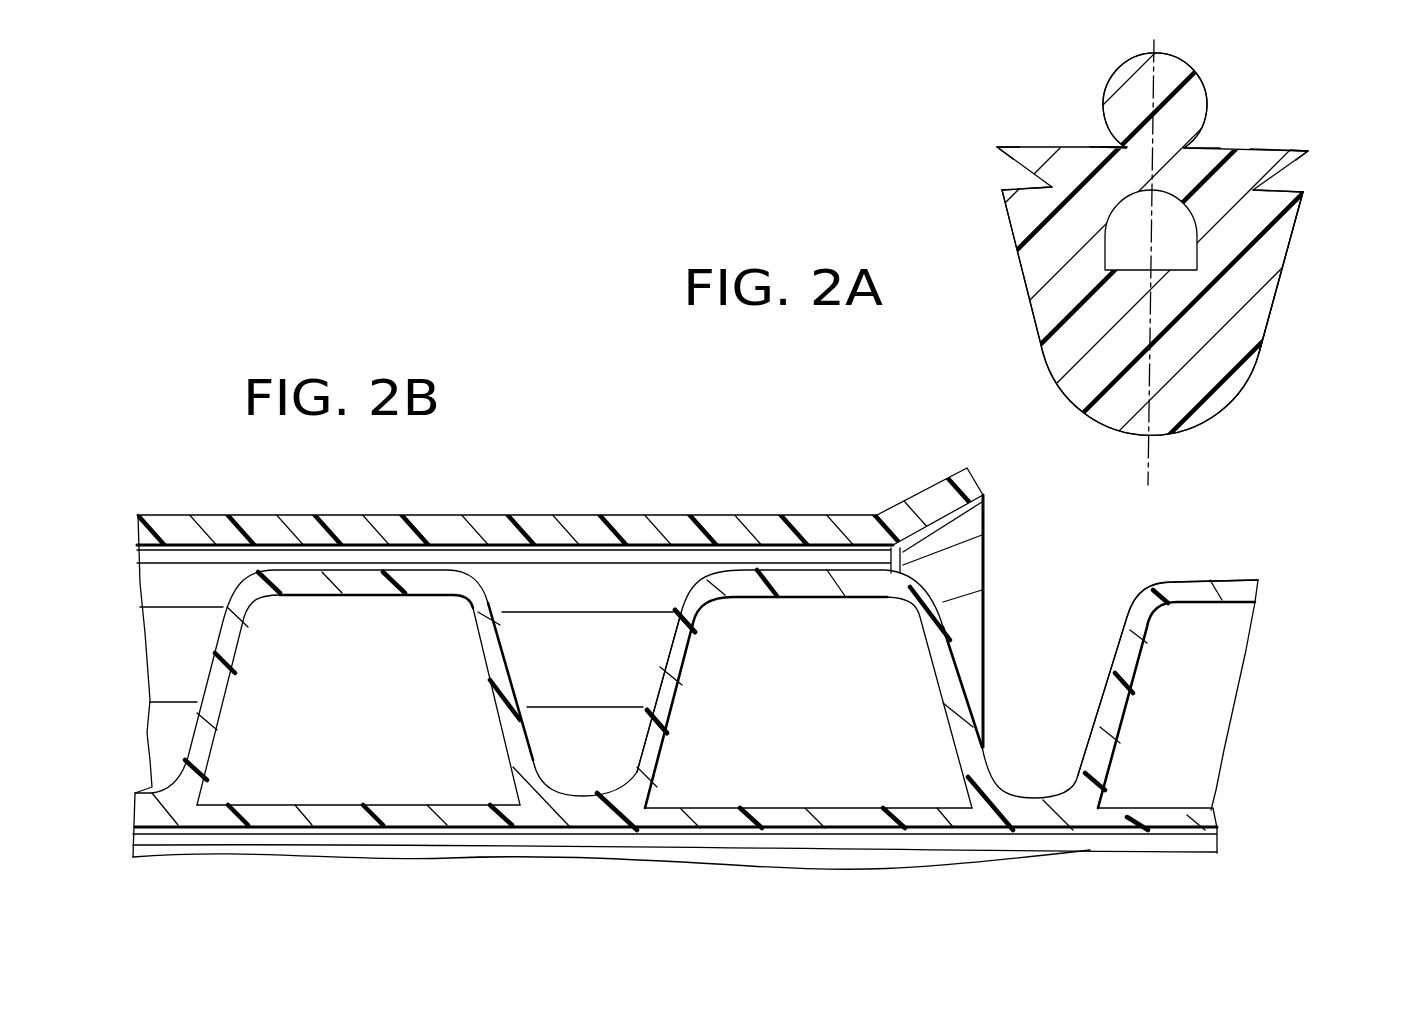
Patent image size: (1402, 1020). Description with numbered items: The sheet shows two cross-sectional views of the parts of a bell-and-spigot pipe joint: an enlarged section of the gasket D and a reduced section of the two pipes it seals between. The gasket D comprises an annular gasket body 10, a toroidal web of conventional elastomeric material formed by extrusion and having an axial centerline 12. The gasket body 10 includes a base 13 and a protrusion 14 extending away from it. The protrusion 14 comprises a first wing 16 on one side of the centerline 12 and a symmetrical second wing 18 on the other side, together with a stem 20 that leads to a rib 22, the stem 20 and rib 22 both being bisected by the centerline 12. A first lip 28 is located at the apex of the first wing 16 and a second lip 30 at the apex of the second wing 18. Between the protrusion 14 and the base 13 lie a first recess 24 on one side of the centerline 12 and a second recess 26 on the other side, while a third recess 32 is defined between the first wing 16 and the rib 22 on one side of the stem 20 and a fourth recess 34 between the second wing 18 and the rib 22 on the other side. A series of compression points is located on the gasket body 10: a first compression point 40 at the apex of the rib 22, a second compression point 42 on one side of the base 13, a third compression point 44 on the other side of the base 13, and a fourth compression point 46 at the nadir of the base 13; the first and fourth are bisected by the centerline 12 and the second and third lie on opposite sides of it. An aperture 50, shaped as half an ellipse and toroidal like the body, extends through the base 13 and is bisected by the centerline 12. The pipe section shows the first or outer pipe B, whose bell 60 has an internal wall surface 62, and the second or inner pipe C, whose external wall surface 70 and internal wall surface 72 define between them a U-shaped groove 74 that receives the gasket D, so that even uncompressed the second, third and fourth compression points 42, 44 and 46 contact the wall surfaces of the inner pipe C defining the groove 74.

In FIG. 2A, the gasket body 10 is at (1005, 325).
In FIG. 2A, the axial centerline 12 is at (1147, 473).
In FIG. 2A, the base 13 is at (1207, 372).
In FIG. 2A, the protrusion 14 is at (1270, 142).
In FIG. 2A, the first wing 16 is at (1043, 160).
In FIG. 2A, the second wing 18 is at (1290, 152).
In FIG. 2A, the stem 20 is at (1122, 145).
In FIG. 2A, the rib 22 is at (1188, 78).
In FIG. 2A, the first recess 24 is at (1027, 182).
In FIG. 2A, the second recess 26 is at (1277, 184).
In FIG. 2A, the first lip 28 is at (997, 148).
In FIG. 2A, the second lip 30 is at (1308, 157).
In FIG. 2A, the third recess 32 is at (1119, 146).
In FIG. 2A, the fourth recess 34 is at (1187, 147).
In FIG. 2A, the first compression point 40 is at (1175, 65).
In FIG. 2A, the second compression point 42 is at (1012, 216).
In FIG. 2A, the third compression point 44 is at (1297, 226).
In FIG. 2A, the fourth compression point 46 is at (1135, 440).
In FIG. 2A, the aperture 50 is at (1106, 244).
In FIG. 2A, the gasket D is at (1297, 299).
In FIG. 2B, the bell 60 is at (717, 532).
In FIG. 2B, the internal wall surface 62 is at (262, 544).
In FIG. 2B, the external wall surface 70 is at (350, 572).
In FIG. 2B, the internal wall surface 72 is at (613, 832).
In FIG. 2B, the groove 74 is at (663, 655).
In FIG. 2B, the first pipe B is at (476, 500).
In FIG. 2B, the second pipe C is at (1225, 568).